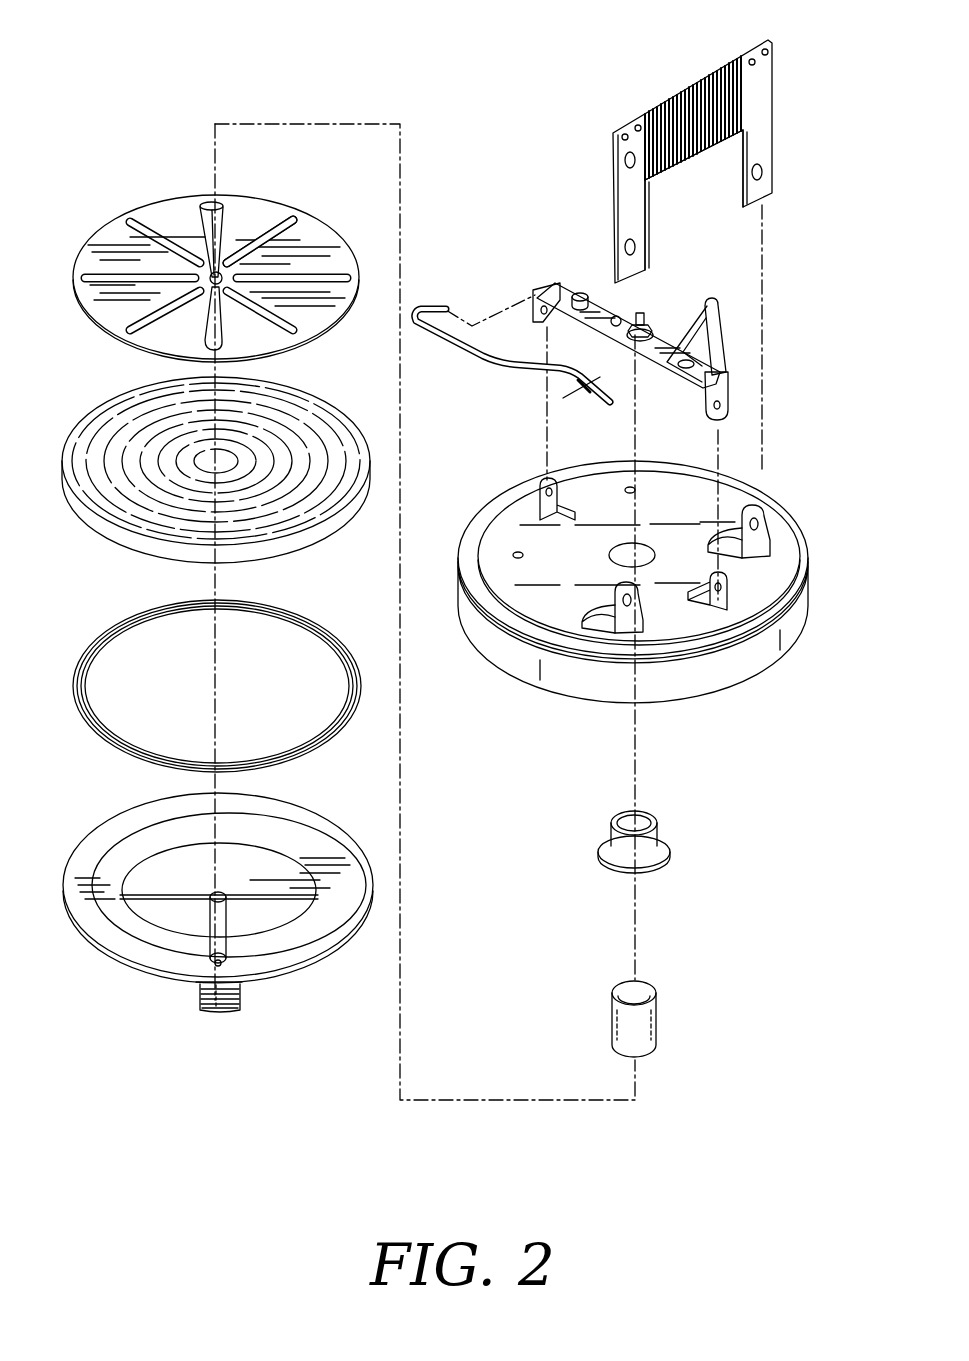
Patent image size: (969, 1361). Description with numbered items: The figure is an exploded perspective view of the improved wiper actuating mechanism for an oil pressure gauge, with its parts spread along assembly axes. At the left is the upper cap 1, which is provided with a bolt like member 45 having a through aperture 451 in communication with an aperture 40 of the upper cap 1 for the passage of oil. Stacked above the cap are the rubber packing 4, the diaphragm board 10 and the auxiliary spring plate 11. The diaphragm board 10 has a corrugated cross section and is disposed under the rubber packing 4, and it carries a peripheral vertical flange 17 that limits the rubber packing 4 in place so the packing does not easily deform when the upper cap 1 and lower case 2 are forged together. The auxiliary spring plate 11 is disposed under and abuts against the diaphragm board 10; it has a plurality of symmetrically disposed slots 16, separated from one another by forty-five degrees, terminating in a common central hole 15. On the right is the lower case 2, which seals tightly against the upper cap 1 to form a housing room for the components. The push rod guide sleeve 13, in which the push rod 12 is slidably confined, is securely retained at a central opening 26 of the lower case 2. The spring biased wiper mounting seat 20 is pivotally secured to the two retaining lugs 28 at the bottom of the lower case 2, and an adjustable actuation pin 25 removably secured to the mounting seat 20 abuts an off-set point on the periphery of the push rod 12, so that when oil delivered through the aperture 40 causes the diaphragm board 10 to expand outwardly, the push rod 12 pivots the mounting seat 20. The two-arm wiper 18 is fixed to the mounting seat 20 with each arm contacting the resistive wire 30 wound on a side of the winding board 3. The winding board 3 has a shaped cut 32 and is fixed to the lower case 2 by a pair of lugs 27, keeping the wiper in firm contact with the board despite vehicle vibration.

The upper cap 1 is at (218, 947).
The lower case 2 is at (672, 605).
The winding board 3 is at (725, 142).
The rubber packing 4 is at (75, 687).
The diaphragm board 10 is at (194, 490).
The auxiliary spring plate 11 is at (199, 270).
The push rod 12 is at (614, 1018).
The push rod guide sleeve 13 is at (665, 852).
The central hole 15 is at (208, 212).
The slots 16 is at (284, 228).
The peripheral vertical flange 17 is at (182, 566).
The two-arm wiper 18 is at (722, 343).
The spring biased wiper mounting seat 20 is at (655, 375).
The adjustable actuation pin 25 is at (641, 318).
The central opening 26 is at (630, 548).
The lugs 27 is at (758, 545).
The retaining lugs 28 is at (546, 485).
The resistive wire 30 is at (720, 66).
The cut 32 is at (708, 193).
The aperture 40 is at (208, 898).
The bolt like member 45 is at (240, 996).
The through aperture 451 is at (220, 998).